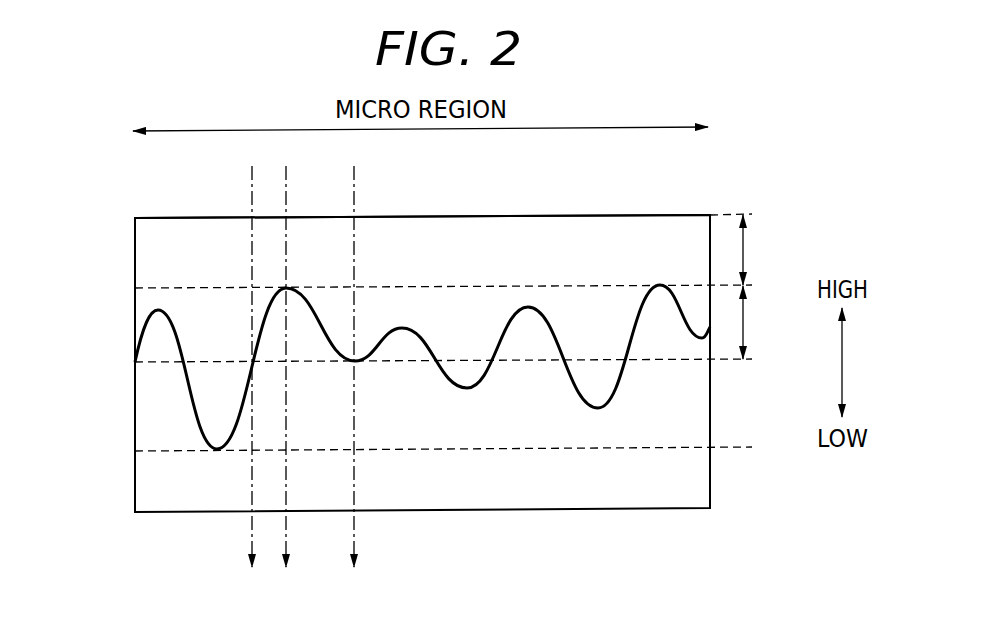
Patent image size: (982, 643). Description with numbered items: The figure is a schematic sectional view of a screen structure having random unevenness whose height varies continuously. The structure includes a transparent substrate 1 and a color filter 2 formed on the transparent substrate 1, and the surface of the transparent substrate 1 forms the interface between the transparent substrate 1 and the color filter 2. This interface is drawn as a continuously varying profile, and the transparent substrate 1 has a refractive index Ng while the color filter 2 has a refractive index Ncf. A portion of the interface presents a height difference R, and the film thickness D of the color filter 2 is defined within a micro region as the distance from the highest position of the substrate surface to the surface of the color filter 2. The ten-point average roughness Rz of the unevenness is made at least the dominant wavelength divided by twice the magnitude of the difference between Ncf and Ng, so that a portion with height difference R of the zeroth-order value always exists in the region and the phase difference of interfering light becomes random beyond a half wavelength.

The transparent substrate 1 is at (147, 492).
The color filter 2 is at (147, 242).
The refractive index of the transparent substrate Ng is at (443, 392).
The refractive index of the color filter Ncf is at (422, 252).
The ten-point average roughness Rz is at (123, 290).
The film thickness of the color filter D is at (755, 250).
The height difference R is at (754, 322).